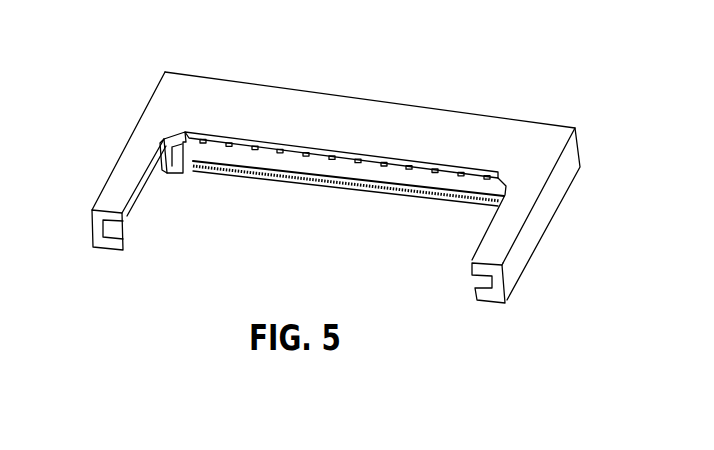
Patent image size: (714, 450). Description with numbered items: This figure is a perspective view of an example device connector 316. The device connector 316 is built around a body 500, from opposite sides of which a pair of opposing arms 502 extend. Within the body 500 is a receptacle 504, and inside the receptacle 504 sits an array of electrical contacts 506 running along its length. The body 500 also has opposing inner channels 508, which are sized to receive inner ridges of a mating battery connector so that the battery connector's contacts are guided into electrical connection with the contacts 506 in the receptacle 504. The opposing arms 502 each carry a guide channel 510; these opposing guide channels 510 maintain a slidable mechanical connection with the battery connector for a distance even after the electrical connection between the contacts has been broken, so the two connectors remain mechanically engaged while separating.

The body 500 is at (293, 100).
The device connector 316 is at (514, 68).
The opposing arms 502 is at (118, 190).
The receptacle 504 is at (268, 161).
The electrical contacts 506 is at (338, 168).
The inner channels 508 is at (174, 159).
The guide channels 510 is at (129, 230).